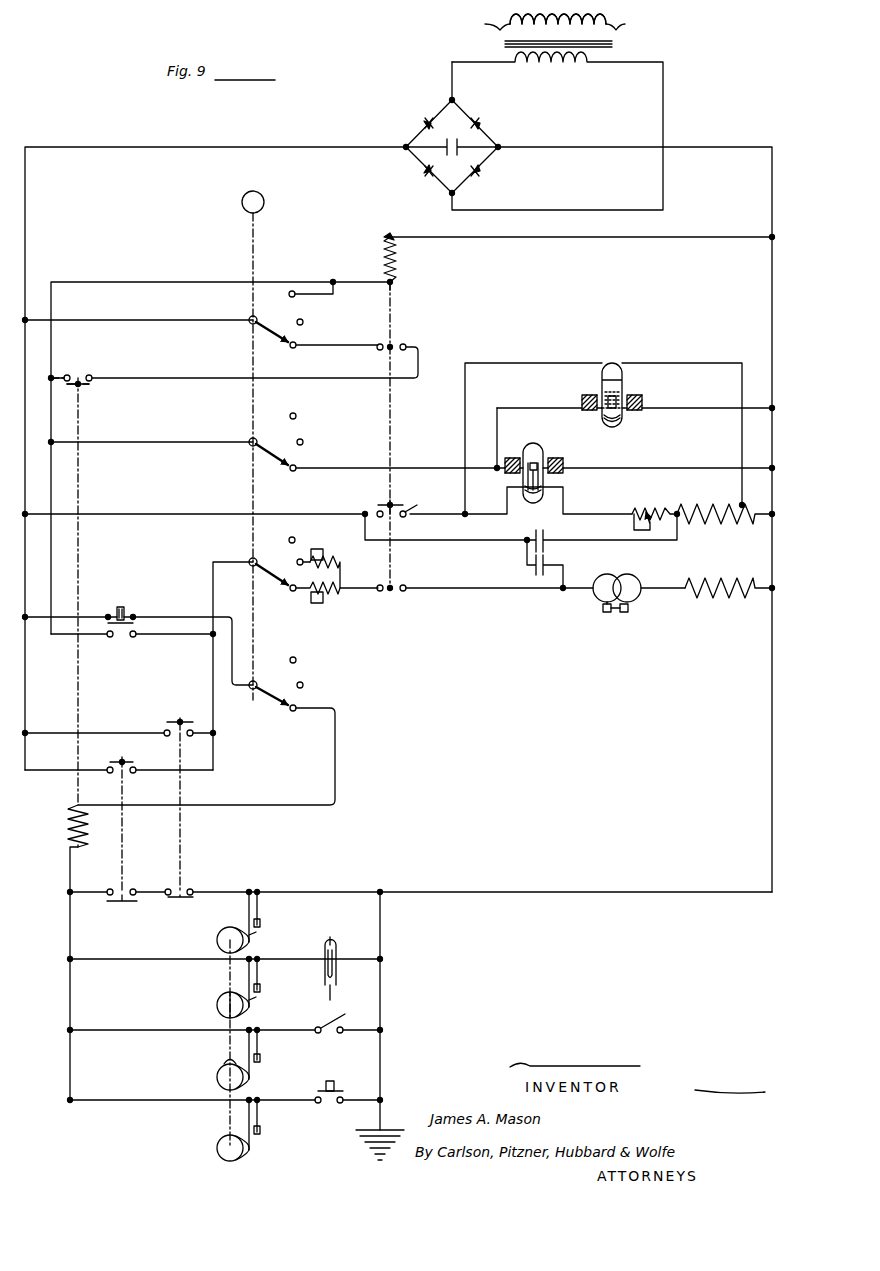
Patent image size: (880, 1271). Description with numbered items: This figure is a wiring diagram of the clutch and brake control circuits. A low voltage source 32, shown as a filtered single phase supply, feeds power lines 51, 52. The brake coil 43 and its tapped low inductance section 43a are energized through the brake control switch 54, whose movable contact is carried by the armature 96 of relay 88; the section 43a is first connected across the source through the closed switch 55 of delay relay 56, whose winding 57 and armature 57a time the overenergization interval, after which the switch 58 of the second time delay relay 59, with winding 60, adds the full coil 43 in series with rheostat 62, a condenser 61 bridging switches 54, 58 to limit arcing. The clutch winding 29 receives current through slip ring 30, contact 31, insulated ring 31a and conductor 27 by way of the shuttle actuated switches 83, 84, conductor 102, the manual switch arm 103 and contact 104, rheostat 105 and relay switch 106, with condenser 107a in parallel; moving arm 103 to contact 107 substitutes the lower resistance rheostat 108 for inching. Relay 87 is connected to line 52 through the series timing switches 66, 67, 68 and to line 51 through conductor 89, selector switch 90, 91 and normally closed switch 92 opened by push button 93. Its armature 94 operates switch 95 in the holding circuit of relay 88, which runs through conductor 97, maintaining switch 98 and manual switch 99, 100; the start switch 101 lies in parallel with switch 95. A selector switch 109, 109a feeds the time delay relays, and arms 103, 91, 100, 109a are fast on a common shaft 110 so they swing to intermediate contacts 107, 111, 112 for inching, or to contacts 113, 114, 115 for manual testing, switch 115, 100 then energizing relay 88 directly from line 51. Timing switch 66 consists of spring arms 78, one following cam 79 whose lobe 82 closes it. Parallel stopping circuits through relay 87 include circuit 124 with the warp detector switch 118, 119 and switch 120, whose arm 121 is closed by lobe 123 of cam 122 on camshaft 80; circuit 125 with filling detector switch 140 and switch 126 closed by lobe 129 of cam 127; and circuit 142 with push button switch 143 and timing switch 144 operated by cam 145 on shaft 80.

The low voltage source 32 is at (634, 43).
The power line 51 is at (92, 147).
The power line 52 is at (753, 142).
The relay 88 is at (382, 250).
The conductor 97 is at (152, 282).
The contact 115 is at (290, 290).
The relay armature 96 is at (398, 305).
The shaft 110 is at (257, 246).
The switch arm 100 is at (263, 335).
The contact 99 is at (334, 356).
The intermediate contact 112 is at (305, 322).
The maintaining switch 98 is at (404, 340).
The relay switch 95 is at (80, 374).
The contact 114 is at (297, 414).
The intermediate contact 111 is at (305, 442).
The selector switch arm 109a is at (262, 455).
The contact 109 is at (531, 480).
The brake control switch 54 is at (404, 511).
The relay switch 55 is at (619, 369).
The delay relay 56 is at (642, 394).
The relay armature 57a is at (603, 414).
The relay winding 57 is at (634, 411).
The relay switch 58 is at (519, 486).
The second time delay relay 59 is at (559, 484).
The relay winding 60 is at (566, 465).
The rheostat 62 is at (648, 512).
The brake coil 43 is at (712, 530).
The coil section 43a is at (745, 533).
The condenser 61 is at (548, 540).
The condenser 107a is at (532, 566).
The conductor 27 is at (490, 592).
The slip ring 30 is at (630, 576).
The insulated nonrotatable ring 31a is at (602, 610).
The contact 31 is at (626, 613).
The clutch winding 29 is at (728, 603).
The contact 113 is at (254, 653).
The switch arm 103 is at (275, 585).
The intermediate contact 107 is at (305, 558).
The adjustable rheostat 108 is at (340, 562).
The contact 104 is at (295, 600).
The adjustable rheostat 105 is at (335, 600).
The switch 106 is at (398, 600).
The normally closed switch 92 is at (134, 612).
The push button 93 is at (119, 606).
The start switch 101 is at (110, 641).
The conductor 102 is at (171, 637).
The selector switch arm 91 is at (270, 700).
The selector switch contact 90 is at (301, 697).
The conductor 89 is at (309, 808).
The shuttle actuated switch 83 is at (183, 709).
The shuttle actuated switch 84 is at (121, 760).
The relay armature 94 is at (74, 803).
The relay 87 is at (68, 846).
The switch 68 is at (129, 890).
The switch 67 is at (187, 890).
The circuit 124 is at (150, 966).
The parallel circuit 125 is at (145, 1032).
The circuit 142 is at (150, 1101).
The cam 79 is at (216, 941).
The cam lobe 82 is at (247, 930).
The spring arms 78 is at (261, 913).
The timing switch 66 is at (259, 933).
The drop wire end 118 is at (334, 938).
The insulated contact 119 is at (336, 952).
The shaft 80 is at (228, 981).
The cam 122 is at (217, 1009).
The spring arm 121 is at (260, 1004).
The switch 120 is at (261, 985).
The cam lobe 123 is at (249, 1012).
The switch 140 is at (346, 1016).
The cam 127 is at (218, 1080).
The cam lobe 129 is at (222, 1061).
The switch 126 is at (262, 1053).
The push button switch 143 is at (341, 1088).
The cam 145 is at (218, 1149).
The timing switch 144 is at (263, 1141).